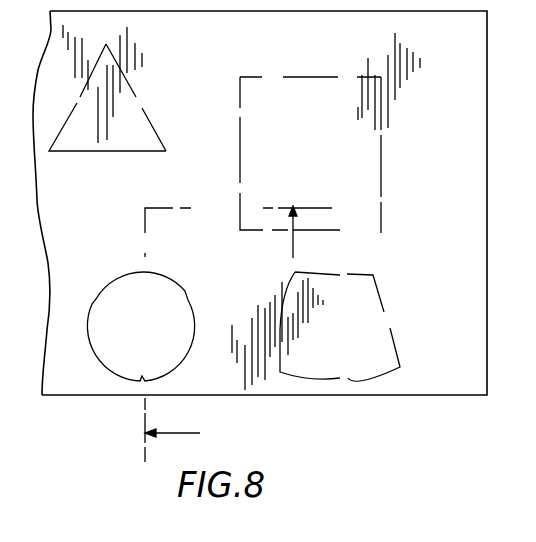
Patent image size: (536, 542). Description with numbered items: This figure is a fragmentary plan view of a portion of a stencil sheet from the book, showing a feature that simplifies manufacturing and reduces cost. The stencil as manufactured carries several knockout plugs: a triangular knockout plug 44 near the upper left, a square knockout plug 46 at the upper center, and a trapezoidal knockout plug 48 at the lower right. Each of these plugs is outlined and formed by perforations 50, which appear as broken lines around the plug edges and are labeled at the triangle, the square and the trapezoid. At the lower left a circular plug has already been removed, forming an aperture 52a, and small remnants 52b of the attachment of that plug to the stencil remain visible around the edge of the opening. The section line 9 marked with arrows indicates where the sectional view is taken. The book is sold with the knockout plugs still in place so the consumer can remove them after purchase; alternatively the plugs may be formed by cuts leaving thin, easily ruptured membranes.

The section line 9- 9 is at (221, 334).
The knockout plug 44 is at (141, 128).
The knockout plug 46 is at (309, 96).
The knockout plug 48 is at (385, 313).
The perforations 50 is at (86, 152).
The aperture 52a is at (122, 292).
The remnants 52b is at (188, 300).